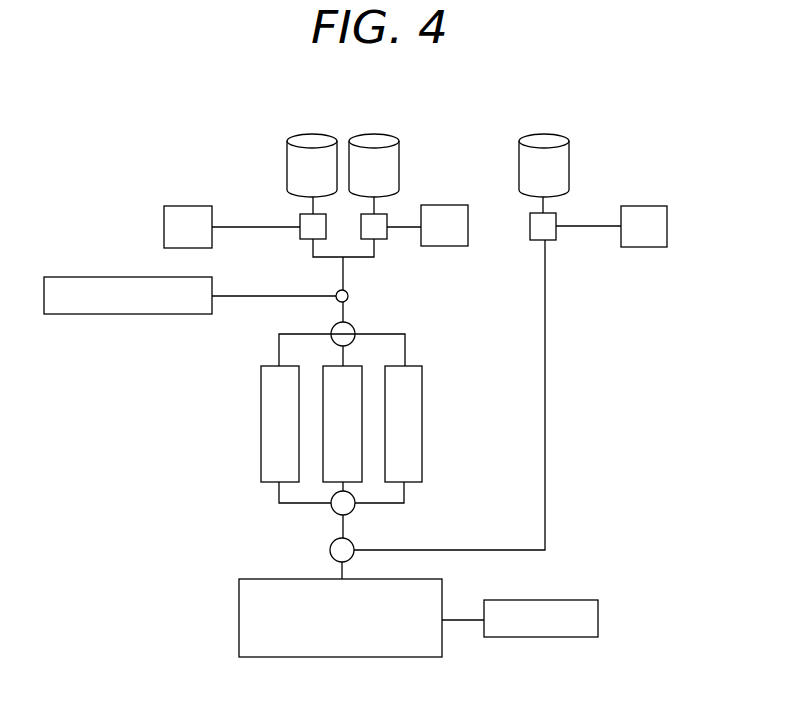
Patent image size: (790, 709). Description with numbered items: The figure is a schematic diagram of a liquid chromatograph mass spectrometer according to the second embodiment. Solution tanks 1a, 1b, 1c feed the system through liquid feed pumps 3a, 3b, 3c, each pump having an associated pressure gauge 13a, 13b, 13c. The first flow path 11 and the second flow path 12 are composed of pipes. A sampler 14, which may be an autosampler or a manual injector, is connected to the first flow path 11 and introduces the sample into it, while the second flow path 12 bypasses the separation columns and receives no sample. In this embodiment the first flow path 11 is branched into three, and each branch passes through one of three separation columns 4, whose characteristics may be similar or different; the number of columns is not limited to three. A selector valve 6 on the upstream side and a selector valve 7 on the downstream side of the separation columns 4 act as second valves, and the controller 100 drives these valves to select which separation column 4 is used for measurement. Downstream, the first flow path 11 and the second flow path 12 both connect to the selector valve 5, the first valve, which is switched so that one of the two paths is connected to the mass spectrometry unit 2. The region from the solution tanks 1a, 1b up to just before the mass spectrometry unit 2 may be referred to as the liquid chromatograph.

The solution tank 1a is at (316, 133).
The solution tank 1b is at (380, 133).
The solution tank 1c is at (548, 133).
The mass spectrometry unit 2 is at (239, 620).
The liquid feed pump 3a is at (306, 240).
The liquid feed pump 3b is at (382, 240).
The liquid feed pump 3c is at (552, 241).
The separation column 4 is at (261, 405).
The selector valve 5 is at (330, 552).
The selector valve 6 is at (331, 331).
The selector valve 7 is at (331, 505).
The first flow path 11 is at (344, 282).
The second flow path 12 is at (546, 444).
The pressure gauge 13a is at (190, 206).
The pressure gauge 13b is at (440, 205).
The pressure gauge 13c is at (643, 206).
The sampler 14 is at (97, 277).
The controller 100 is at (600, 620).